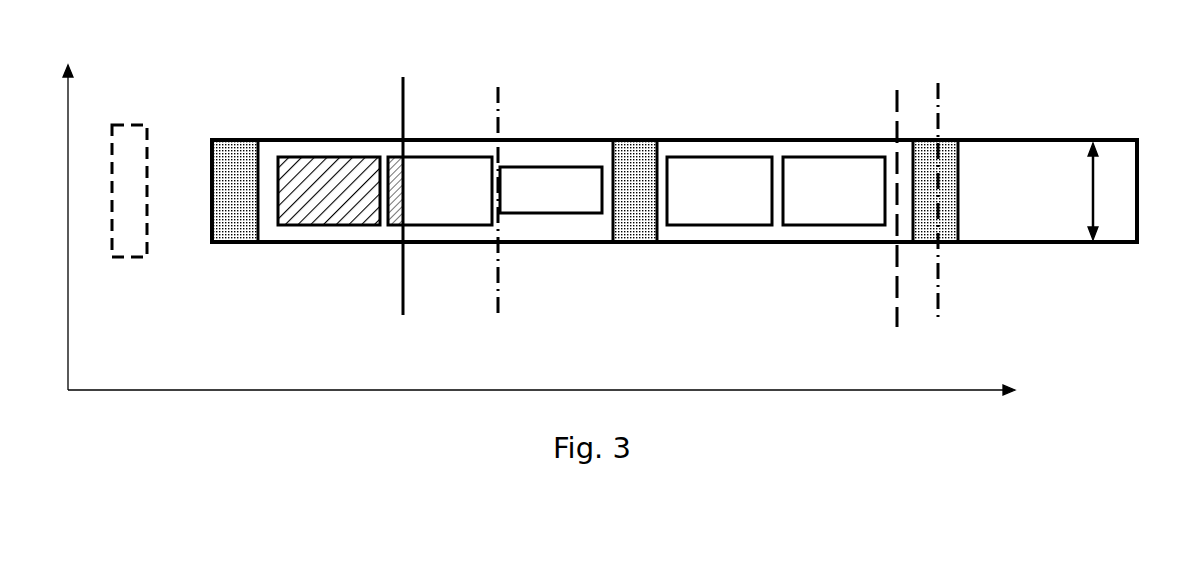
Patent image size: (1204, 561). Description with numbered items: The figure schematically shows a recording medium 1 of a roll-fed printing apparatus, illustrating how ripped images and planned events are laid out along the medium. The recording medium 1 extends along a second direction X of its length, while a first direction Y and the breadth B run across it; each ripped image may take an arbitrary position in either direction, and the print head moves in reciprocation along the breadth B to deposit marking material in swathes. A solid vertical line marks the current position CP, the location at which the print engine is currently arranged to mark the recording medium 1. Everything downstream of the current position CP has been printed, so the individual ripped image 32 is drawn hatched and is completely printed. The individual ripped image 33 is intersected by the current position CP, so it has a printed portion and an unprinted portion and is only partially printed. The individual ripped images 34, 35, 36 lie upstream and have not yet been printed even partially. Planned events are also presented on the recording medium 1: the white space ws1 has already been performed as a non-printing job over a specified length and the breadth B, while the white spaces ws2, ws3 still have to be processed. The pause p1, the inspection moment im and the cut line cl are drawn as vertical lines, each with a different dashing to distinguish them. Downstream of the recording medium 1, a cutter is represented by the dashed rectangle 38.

The recording medium 1 is at (1040, 160).
The individual ripped image 32 is at (322, 160).
The individual ripped image 33 is at (437, 165).
The individual ripped image 34 is at (535, 167).
The individual ripped image 35 is at (758, 158).
The individual ripped image 36 is at (830, 158).
The dashed rectangle 38 is at (118, 124).
The white space ws1 is at (224, 140).
The white space ws2 is at (652, 243).
The white space ws3 is at (950, 140).
The current position CP is at (404, 295).
The pause p1 is at (500, 308).
The inspection moment im is at (897, 280).
The cut line cl is at (942, 305).
The breadth B is at (1097, 207).
The second direction X is at (551, 392).
The first direction Y is at (68, 213).